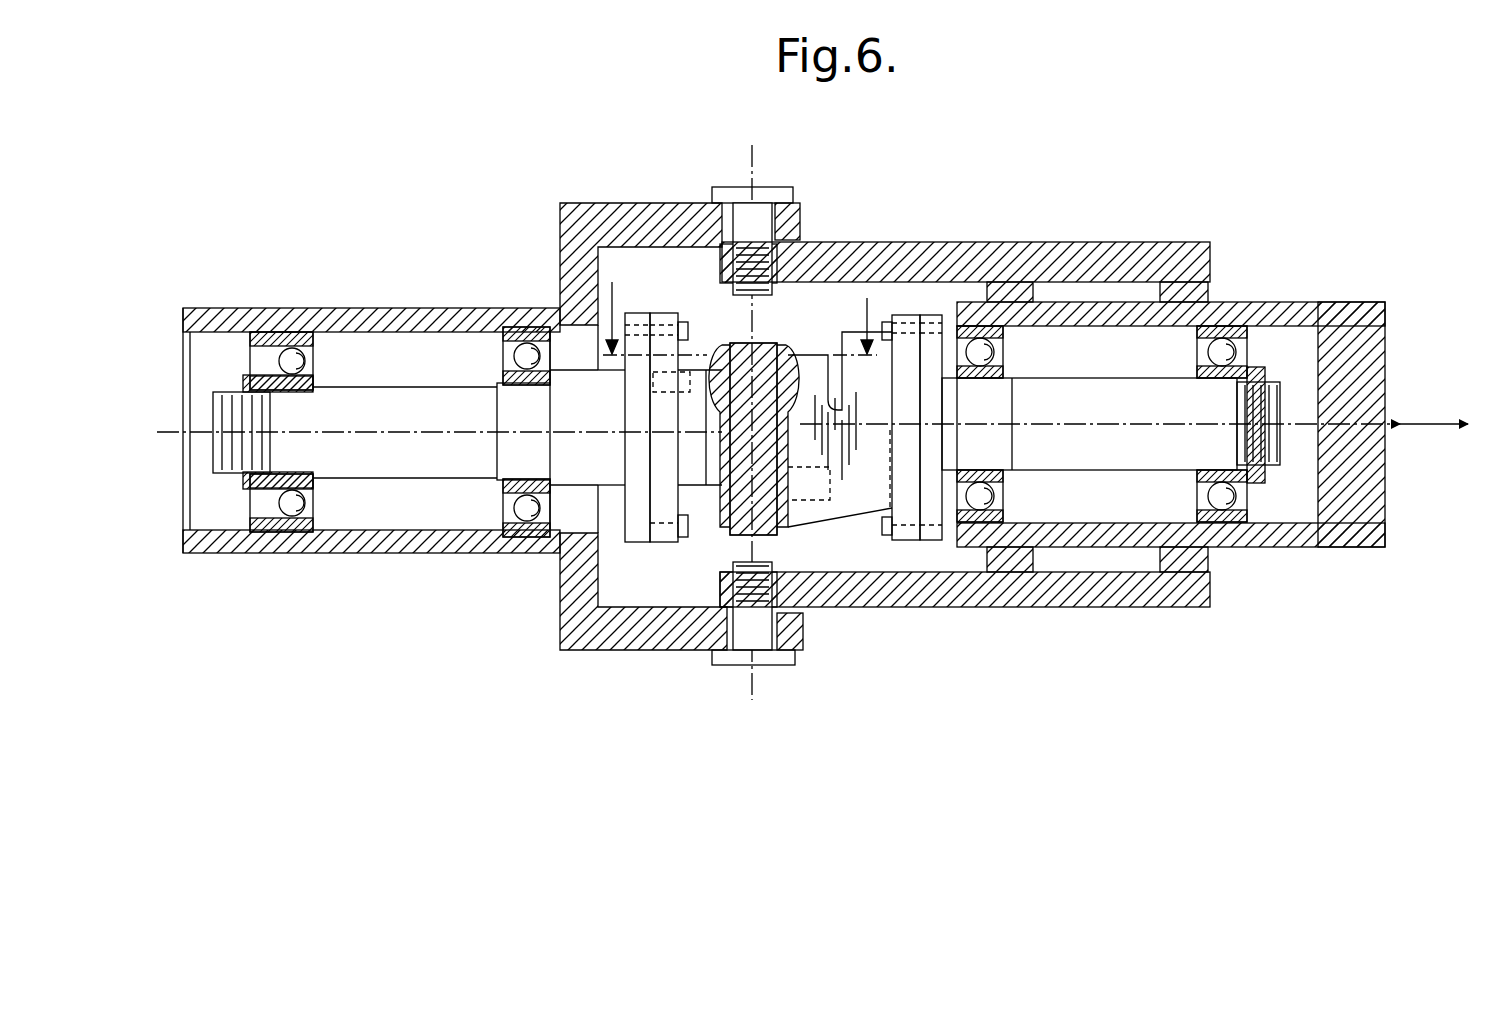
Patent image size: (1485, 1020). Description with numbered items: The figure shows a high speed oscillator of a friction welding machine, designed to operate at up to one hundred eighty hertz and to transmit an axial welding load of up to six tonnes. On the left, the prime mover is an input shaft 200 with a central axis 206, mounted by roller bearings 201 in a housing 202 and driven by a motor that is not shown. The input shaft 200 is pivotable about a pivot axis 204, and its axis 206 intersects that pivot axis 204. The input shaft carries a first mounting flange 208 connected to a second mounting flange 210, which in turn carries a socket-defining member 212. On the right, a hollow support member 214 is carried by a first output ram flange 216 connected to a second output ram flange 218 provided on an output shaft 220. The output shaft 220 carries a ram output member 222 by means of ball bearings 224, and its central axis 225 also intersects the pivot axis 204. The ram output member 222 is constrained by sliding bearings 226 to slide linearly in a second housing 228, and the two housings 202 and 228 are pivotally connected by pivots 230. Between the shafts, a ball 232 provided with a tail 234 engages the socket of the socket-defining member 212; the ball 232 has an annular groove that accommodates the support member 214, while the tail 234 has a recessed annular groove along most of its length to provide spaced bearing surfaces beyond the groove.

The input shaft 200 is at (397, 350).
The roller bearings 201 is at (288, 330).
The housing 202 is at (585, 228).
The pivot axis 204 is at (752, 158).
The central axis 206 is at (395, 436).
The first mounting flange 208 is at (640, 507).
The second mounting flange 210 is at (667, 507).
The socket-defining member 212 is at (697, 403).
The hollow support member 214 is at (858, 490).
The first output ram flange 216 is at (905, 530).
The second output ram flange 218 is at (935, 530).
The output shaft 220 is at (1053, 390).
The ram output member 222 is at (1360, 325).
The ball bearings 224 is at (1235, 330).
The central axis 225 is at (1153, 426).
The sliding bearings 226 is at (1195, 556).
The second housing 228 is at (1212, 593).
The pivots 230 is at (770, 196).
The ball 232 is at (790, 345).
The tail 234 is at (775, 536).